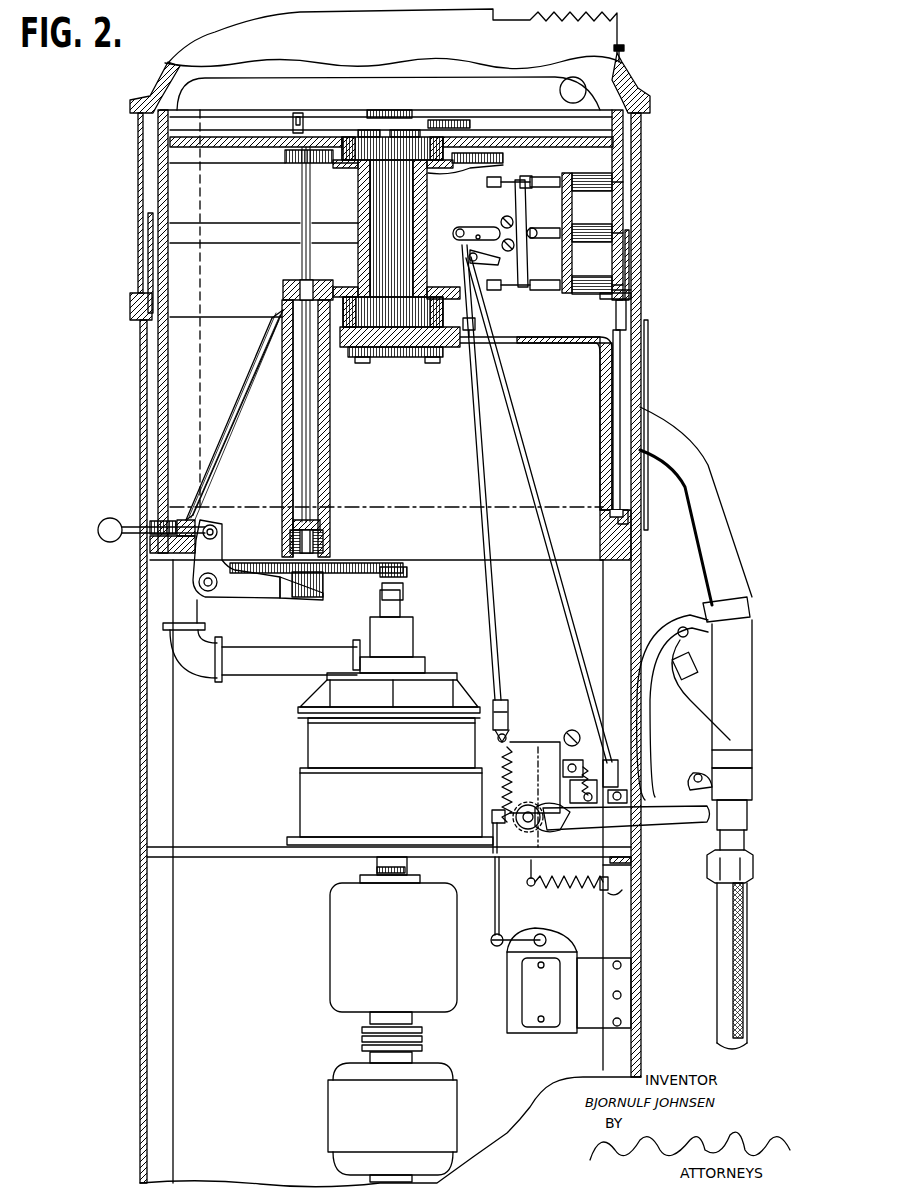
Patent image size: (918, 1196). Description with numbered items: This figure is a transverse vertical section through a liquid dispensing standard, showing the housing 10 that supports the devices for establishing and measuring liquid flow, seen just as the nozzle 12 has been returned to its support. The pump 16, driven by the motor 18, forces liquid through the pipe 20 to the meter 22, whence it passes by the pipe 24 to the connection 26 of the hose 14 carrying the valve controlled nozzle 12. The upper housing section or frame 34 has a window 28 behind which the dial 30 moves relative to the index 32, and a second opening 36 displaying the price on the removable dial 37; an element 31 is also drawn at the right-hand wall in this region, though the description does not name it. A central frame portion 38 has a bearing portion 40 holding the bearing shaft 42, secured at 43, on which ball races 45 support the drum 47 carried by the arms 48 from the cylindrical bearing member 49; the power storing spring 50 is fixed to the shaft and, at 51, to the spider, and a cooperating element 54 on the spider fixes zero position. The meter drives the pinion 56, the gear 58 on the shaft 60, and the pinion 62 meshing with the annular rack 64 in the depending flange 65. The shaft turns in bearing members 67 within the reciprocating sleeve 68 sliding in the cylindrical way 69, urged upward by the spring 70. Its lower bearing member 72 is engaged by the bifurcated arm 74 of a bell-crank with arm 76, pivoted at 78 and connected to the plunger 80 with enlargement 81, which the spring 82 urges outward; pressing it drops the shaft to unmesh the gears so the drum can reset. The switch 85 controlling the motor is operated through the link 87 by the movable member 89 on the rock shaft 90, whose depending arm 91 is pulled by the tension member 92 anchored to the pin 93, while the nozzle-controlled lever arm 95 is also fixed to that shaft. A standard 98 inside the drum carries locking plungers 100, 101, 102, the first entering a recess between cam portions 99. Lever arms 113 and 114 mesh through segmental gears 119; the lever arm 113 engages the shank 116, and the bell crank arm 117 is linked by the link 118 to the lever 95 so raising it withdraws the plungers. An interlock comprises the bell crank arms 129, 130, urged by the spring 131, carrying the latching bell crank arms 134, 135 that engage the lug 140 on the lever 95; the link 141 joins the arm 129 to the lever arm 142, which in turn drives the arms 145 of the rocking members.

The housing 10 is at (140, 759).
The nozzle 12 is at (715, 535).
The hose 14 is at (725, 1003).
The pump 16 is at (345, 932).
The motor 18 is at (345, 1122).
The pipe 20 is at (377, 870).
The meter 22 is at (330, 754).
The pipe 24 is at (258, 683).
The connection 26 is at (624, 52).
The opening or window 28 is at (138, 137).
The dial 30 is at (158, 182).
The plate 31 is at (640, 350).
The index 32 is at (148, 228).
The supporting element or frame 34 is at (626, 560).
The second opening 36 is at (642, 365).
The removable dial 37 is at (618, 400).
The supporting frame portion 38 is at (556, 345).
The bearing portion 40 is at (405, 358).
The bearing shaft 42 is at (386, 347).
The securing means 43 is at (426, 358).
The ball races 45 is at (398, 150).
The drum 47 is at (233, 305).
The arms 48 is at (230, 147).
The cylindrical bearing member 49 is at (358, 208).
The power storing spring 50 is at (322, 117).
The spring fixing point 51 is at (292, 124).
The cooperating element 54 is at (475, 325).
The pinion 56 is at (407, 576).
The gear 58 is at (356, 574).
The shaft 60 is at (301, 264).
The pinion 62 is at (296, 163).
The annular rack 64 is at (462, 163).
The depending annular frame or flange 65 is at (495, 170).
The bearing members 67 is at (314, 284).
The reciprocating sleeve 68 is at (282, 476).
The cylindrical way 69 is at (282, 522).
The spring 70 is at (323, 541).
The bearing member 72 is at (303, 598).
The bell-crank arm 74 is at (255, 592).
The bell-crank arm 76 is at (200, 566).
The pivot 78 is at (200, 584).
The plunger 80 is at (150, 524).
The enlargement 81 is at (97, 530).
The spring 82 is at (150, 553).
The switch 85 is at (510, 1010).
The link 87 is at (495, 905).
The movable member 89 is at (490, 812).
The rock shaft 90 is at (528, 812).
The depending arm 91 is at (540, 871).
The tension member 92 is at (592, 888).
The stop or pin 93 is at (622, 895).
The lever arm 95 is at (690, 822).
The supplemental frame or standard 98 is at (632, 294).
The cam portions 99 is at (226, 233).
The plunger or locking pin 100 is at (600, 215).
The plunger or locking pin 101 is at (605, 182).
The plunger or locking pin 102 is at (625, 245).
The lever arm 113 is at (513, 220).
The lever arm 114 is at (514, 258).
The shank 116 is at (505, 176).
The arm 117 is at (470, 258).
The link 118 is at (525, 436).
The segmental gear 119 is at (514, 225).
The laterally extending arm 129 is at (522, 738).
The downwardly extending arm 130 is at (570, 752).
The spring 131 is at (505, 757).
The bell crank arm 134 is at (583, 730).
The bell crank arm 135 is at (570, 787).
The lug or shoulder 140 is at (604, 876).
The link 141 is at (489, 498).
The lever arm 142 is at (453, 233).
The arms 145 is at (530, 176).